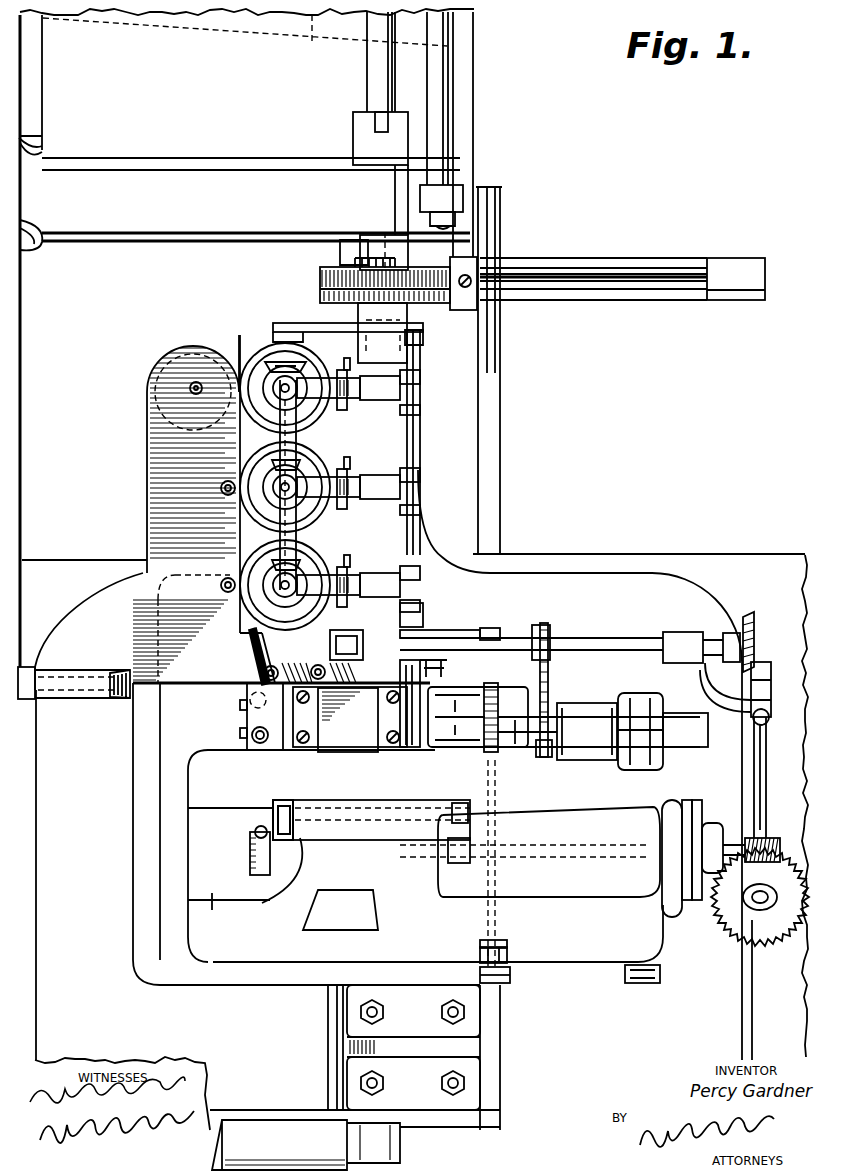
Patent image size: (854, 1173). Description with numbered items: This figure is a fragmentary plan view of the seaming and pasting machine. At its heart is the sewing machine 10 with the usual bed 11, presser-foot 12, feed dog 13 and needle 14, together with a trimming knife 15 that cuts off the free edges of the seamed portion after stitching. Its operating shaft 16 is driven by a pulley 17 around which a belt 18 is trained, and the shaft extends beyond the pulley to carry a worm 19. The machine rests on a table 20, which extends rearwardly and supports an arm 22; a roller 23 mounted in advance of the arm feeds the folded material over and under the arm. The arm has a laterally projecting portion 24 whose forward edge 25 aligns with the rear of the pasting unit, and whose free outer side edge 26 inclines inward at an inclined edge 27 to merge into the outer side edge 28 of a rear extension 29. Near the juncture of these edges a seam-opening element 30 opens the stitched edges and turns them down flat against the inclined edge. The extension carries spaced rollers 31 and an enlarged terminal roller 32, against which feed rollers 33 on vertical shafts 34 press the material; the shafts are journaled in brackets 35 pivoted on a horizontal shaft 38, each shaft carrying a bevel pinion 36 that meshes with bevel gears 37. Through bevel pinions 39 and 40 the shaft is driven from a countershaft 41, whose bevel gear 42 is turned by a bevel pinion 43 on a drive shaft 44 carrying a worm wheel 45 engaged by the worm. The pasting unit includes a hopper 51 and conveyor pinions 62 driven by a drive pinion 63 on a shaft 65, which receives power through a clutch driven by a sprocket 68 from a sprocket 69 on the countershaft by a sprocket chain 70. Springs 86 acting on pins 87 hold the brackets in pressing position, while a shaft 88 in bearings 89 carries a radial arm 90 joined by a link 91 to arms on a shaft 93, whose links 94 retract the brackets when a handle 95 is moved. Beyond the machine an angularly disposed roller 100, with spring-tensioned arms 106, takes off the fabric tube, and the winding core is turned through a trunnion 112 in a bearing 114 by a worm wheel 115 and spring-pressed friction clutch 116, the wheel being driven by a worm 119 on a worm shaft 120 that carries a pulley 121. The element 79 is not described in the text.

The sewing machine 10 is at (501, 863).
The bed 11 is at (283, 869).
The presser-foot 12 is at (266, 880).
The feed dog 13 is at (250, 856).
The needle 14 is at (516, 750).
The cutting or trimming knife 15 is at (276, 845).
The operating shaft 16 is at (572, 880).
The pulley 17 is at (700, 905).
The belt 18 is at (680, 917).
The worm 19 is at (772, 838).
The table 20 is at (592, 572).
The arm 22 is at (74, 863).
The roller 23 is at (290, 1115).
The laterally projecting portion 24 is at (216, 638).
The forward edge 25 is at (190, 688).
The free outer side edge 26 is at (263, 670).
The inclined edge 27 is at (240, 545).
The free outer side edge 28 is at (240, 560).
The rear extension 29 is at (160, 491).
The seam-opening element 30 is at (240, 660).
The rollers 31 is at (228, 478).
The enlarged roller 32 is at (228, 372).
The feed rollers 33 is at (322, 420).
The vertical shafts 34 is at (310, 572).
The brackets 35 is at (240, 612).
The bevel pinion 36 is at (260, 392).
The bevel gears 37 is at (268, 364).
The horizontally mounted shaft 38 is at (265, 462).
The bevel pinion 39 is at (252, 626).
The bevel pinion 40 is at (312, 666).
The countershaft 41 is at (500, 630).
The bevel gear 42 is at (750, 612).
The bevel pinion 43 is at (766, 662).
The drive shaft 44 is at (767, 770).
The worm wheel 45 is at (772, 925).
The container or hopper 51 is at (330, 706).
The pinions 62 is at (490, 683).
The drive pinion 63 is at (490, 748).
The shaft 65 is at (627, 703).
The sprocket 68 is at (546, 757).
The sprocket 69 is at (550, 640).
The sprocket chain 70 is at (549, 666).
The foot 79 is at (636, 985).
The springs 86 is at (410, 372).
The pins 87 is at (352, 556).
The shaft 88 is at (480, 942).
The bearings 89 is at (423, 614).
The radial arm 90 is at (500, 634).
The link 91 is at (460, 630).
The shaft 93 is at (422, 525).
The links 94 is at (400, 412).
The manipulated handle 95 is at (510, 980).
The angularly disposed roller 100 is at (40, 118).
The spring-tensioned arms 106 is at (22, 474).
The trunnion 112 is at (368, 88).
The bearing 114 is at (340, 248).
The worm wheel 115 is at (320, 285).
The spring-pressed friction clutch 116 is at (320, 300).
The worm 119 is at (380, 235).
The worm shaft 120 is at (576, 266).
The sheave or pulley 121 is at (503, 214).